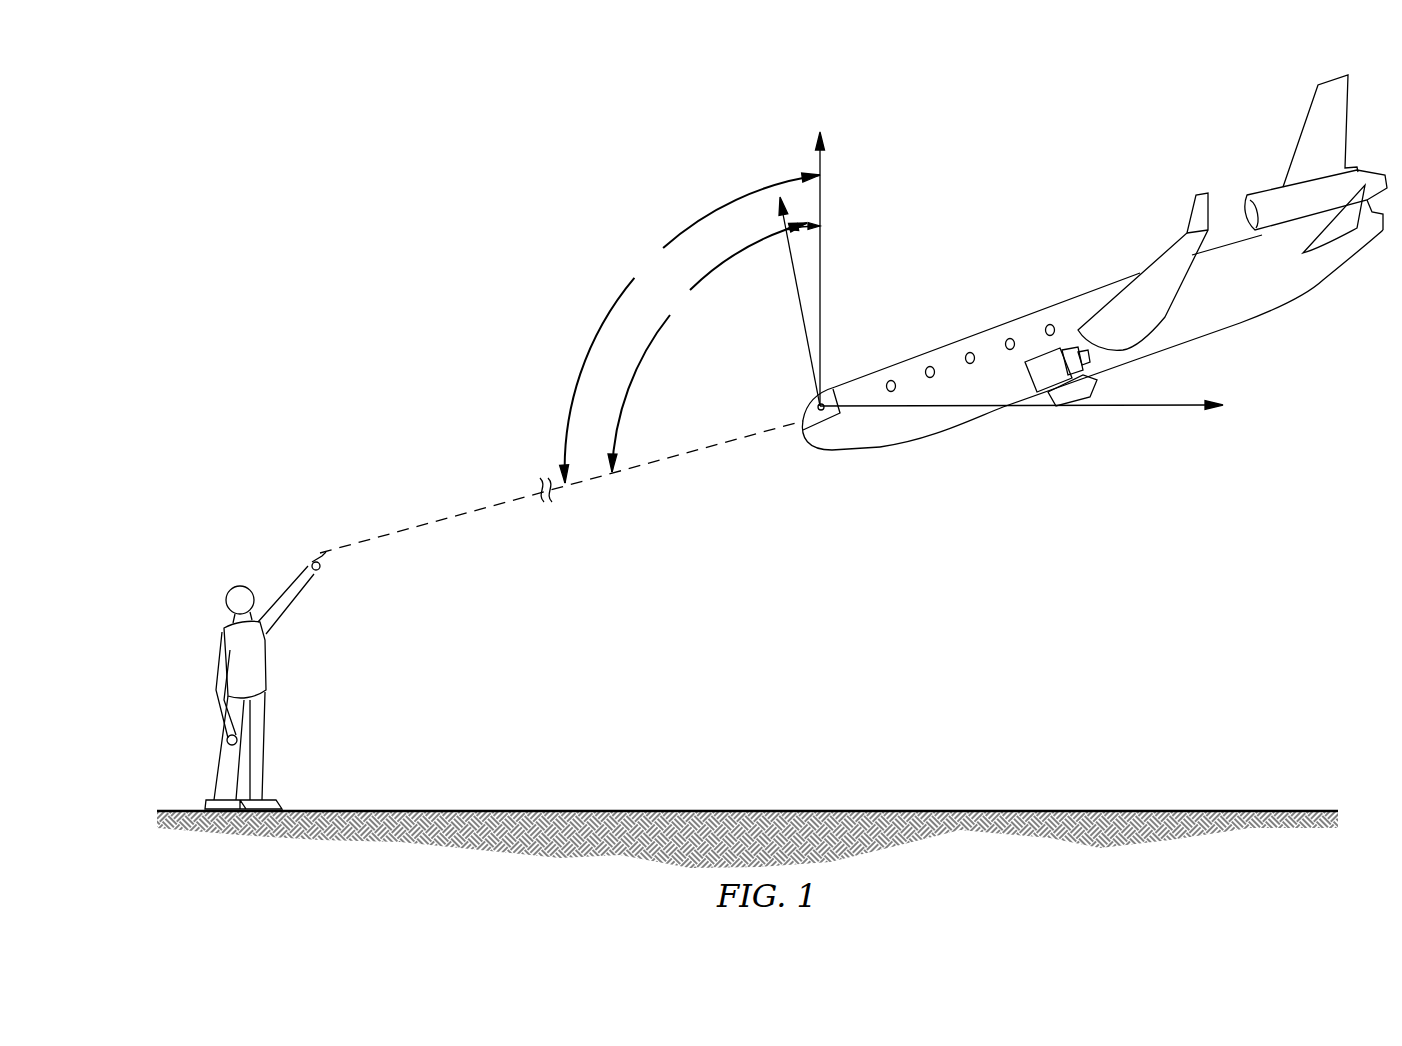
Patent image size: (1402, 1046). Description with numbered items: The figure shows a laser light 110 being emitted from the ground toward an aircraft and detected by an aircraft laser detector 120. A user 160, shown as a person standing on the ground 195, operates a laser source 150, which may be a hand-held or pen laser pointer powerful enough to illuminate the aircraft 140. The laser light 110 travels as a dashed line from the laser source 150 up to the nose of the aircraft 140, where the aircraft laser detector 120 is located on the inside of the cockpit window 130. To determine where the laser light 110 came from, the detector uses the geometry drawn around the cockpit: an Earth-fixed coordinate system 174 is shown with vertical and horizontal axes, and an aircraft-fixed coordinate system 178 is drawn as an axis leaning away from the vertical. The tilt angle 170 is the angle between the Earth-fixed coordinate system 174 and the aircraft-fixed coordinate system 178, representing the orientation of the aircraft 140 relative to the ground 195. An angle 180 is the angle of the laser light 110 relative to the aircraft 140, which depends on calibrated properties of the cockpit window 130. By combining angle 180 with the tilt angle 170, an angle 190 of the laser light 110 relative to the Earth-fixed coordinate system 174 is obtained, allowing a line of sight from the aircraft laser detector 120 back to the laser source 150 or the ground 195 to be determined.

The laser light 110 is at (578, 485).
The aircraft laser detector 120 is at (842, 418).
The cockpit window 130 is at (815, 408).
The aircraft 140 is at (1243, 325).
The laser source 150 is at (322, 560).
The user 160 is at (217, 634).
The tilt angle 170 is at (800, 232).
The Earth-fixed coordinate system 174 is at (820, 160).
The aircraft-fixed coordinate system 178 is at (798, 292).
The angle 180 is at (707, 347).
The angle 190 is at (690, 328).
The ground 195 is at (1080, 840).